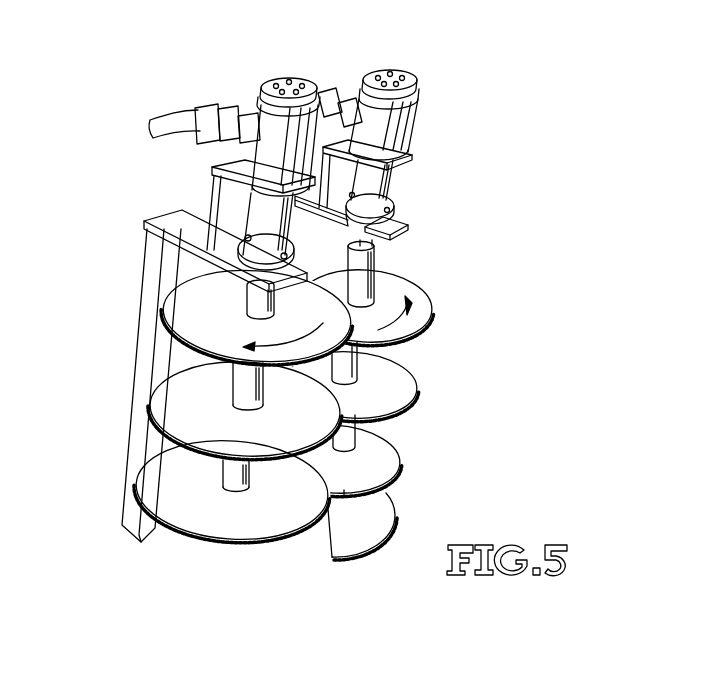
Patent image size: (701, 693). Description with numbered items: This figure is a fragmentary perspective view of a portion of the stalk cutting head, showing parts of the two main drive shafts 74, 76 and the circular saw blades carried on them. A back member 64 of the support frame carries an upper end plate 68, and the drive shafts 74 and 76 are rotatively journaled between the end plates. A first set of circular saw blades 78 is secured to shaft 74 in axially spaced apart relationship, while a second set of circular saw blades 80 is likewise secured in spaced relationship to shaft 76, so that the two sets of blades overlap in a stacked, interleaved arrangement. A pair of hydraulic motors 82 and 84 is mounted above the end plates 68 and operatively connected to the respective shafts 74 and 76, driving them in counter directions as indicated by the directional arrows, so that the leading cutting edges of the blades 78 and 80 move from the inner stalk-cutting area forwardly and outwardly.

The back member 64 is at (138, 385).
The upper end plate 68 is at (170, 216).
The drive shaft 74 is at (227, 470).
The drive shaft 76 is at (397, 363).
The circular saw blade 78 is at (168, 380).
The circular saw blade 80 is at (408, 297).
The hydraulic motor 82 is at (258, 80).
The hydraulic motor 84 is at (427, 88).